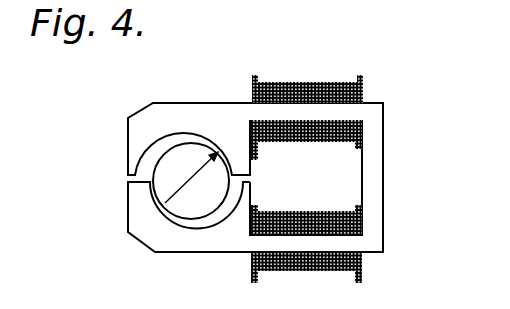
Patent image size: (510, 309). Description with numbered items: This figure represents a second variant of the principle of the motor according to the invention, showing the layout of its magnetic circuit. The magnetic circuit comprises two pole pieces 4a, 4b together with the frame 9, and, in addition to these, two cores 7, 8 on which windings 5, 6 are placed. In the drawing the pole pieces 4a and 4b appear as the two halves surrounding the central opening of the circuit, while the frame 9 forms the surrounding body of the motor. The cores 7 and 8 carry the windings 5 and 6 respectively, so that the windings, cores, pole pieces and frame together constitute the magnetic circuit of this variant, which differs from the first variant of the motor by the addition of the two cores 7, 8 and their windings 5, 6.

The pole piece 4a is at (187, 118).
The pole piece 4b is at (197, 240).
The winding 5 is at (363, 85).
The winding 6 is at (365, 272).
The core 7 is at (347, 112).
The core 8 is at (343, 243).
The frame 9 is at (370, 168).